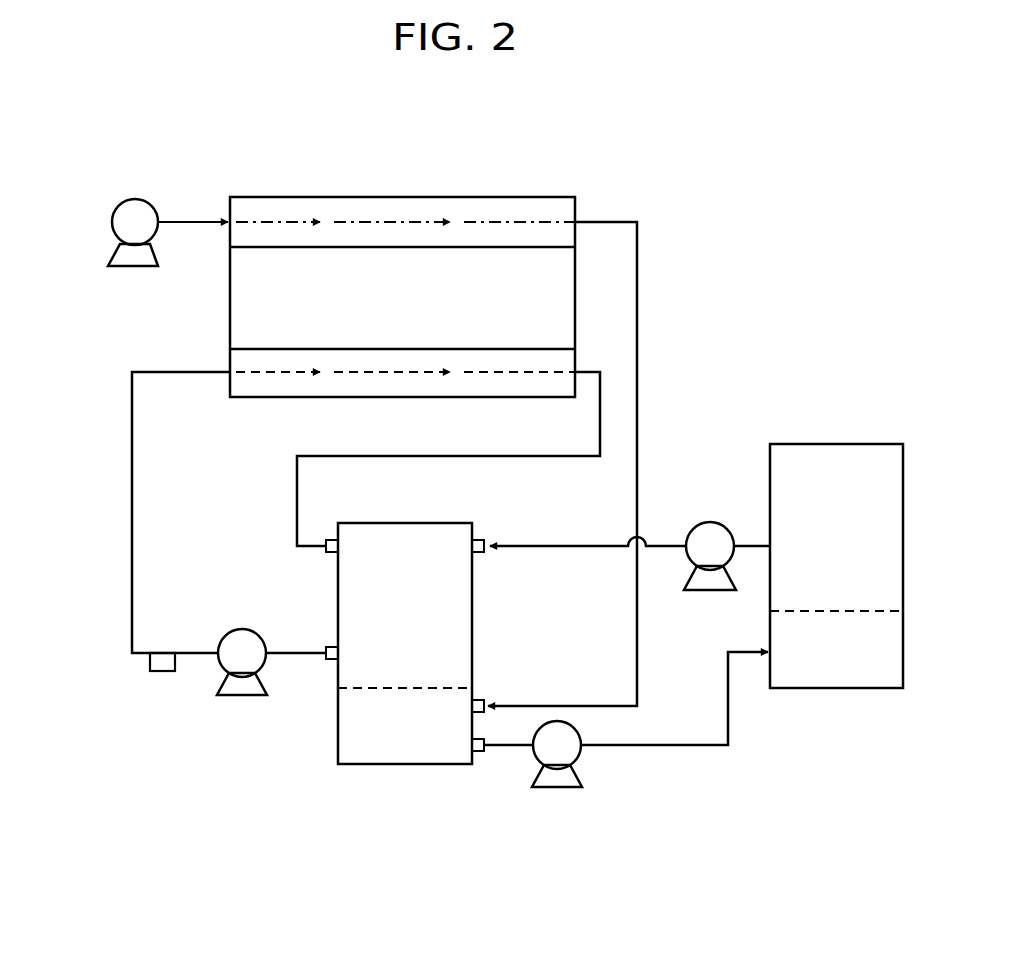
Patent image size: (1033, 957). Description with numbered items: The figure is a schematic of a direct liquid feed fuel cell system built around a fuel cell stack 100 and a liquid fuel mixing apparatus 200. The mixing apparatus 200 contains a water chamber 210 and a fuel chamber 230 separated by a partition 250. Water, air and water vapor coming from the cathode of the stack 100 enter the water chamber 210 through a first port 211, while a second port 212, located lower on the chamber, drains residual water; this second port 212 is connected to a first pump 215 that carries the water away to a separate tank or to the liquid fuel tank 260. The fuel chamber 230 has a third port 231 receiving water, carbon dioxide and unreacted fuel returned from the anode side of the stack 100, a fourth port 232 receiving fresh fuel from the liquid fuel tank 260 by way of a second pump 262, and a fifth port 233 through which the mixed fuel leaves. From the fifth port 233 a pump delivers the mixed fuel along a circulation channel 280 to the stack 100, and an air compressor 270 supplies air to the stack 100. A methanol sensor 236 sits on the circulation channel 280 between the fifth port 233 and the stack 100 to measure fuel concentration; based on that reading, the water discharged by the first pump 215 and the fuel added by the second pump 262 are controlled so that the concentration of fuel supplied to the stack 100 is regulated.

The fuel cell stack 100 is at (485, 195).
The liquid fuel mixing apparatus 200 is at (391, 772).
The water chamber 210 is at (408, 723).
The first port 211 is at (482, 700).
The second port 212 is at (477, 755).
The first pump 215 is at (557, 790).
The fuel chamber 230 is at (408, 603).
The third port 231 is at (297, 498).
The fourth port 232 is at (235, 697).
The fifth port 233 is at (330, 646).
The methanol sensor 236 is at (153, 672).
The partition 250 is at (355, 689).
The liquid fuel tank 260 is at (837, 443).
The second pump 262 is at (710, 521).
The air compressor 270 is at (135, 199).
The circulation channel 280 is at (637, 295).